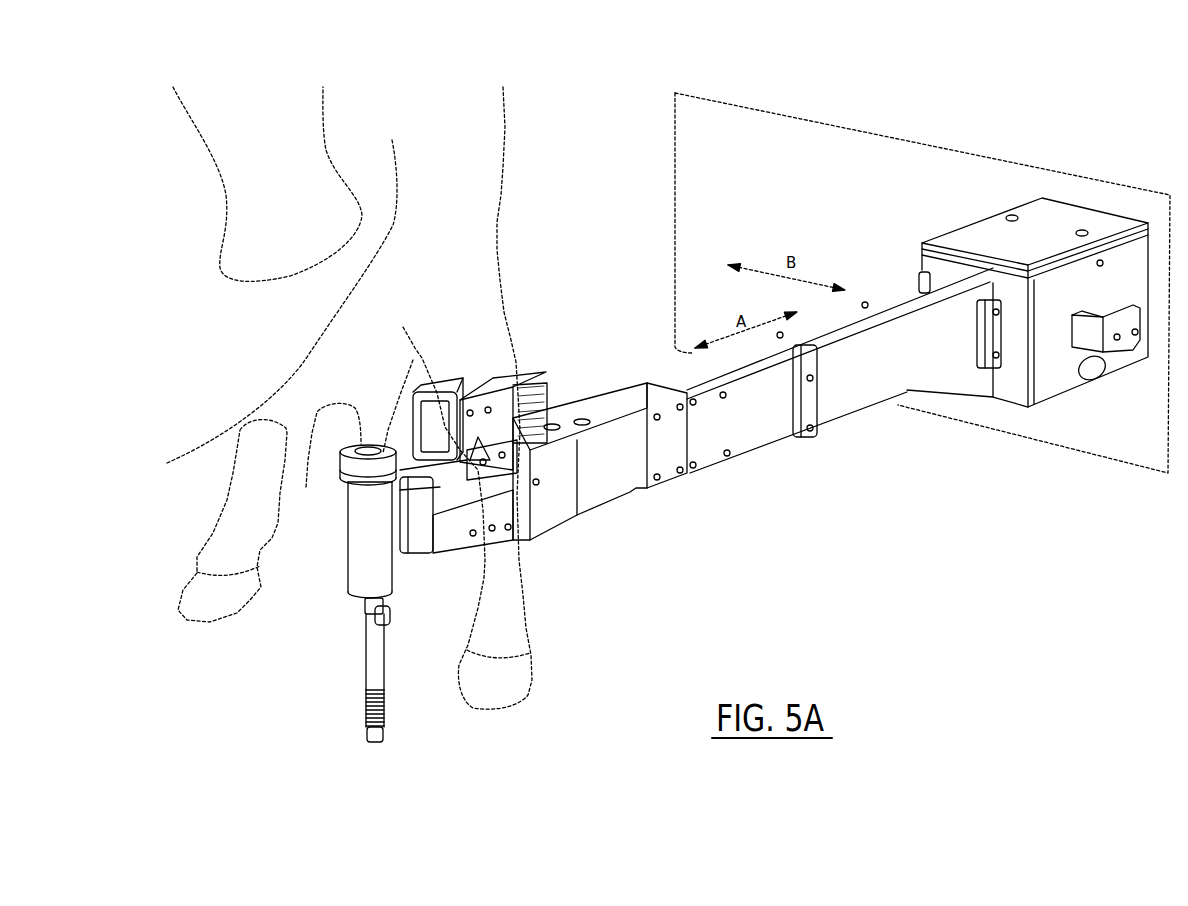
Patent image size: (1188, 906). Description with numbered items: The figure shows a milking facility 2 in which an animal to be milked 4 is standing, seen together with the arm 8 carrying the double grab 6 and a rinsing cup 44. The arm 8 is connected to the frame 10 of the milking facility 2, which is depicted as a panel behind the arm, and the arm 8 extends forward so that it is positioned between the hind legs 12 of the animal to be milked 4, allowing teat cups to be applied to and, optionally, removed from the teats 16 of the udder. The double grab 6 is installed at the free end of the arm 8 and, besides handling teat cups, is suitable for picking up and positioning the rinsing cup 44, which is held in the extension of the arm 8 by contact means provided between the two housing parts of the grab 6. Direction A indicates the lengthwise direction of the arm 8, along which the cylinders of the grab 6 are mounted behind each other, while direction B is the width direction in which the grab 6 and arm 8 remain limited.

The milking facility 2 is at (600, 212).
The animal to be milked 4 is at (500, 223).
The double grab 6 is at (330, 600).
The arm 8 is at (850, 432).
The frame 10 is at (983, 172).
The hind legs 12 is at (240, 500).
The teats 16 is at (358, 437).
The rinsing cup 44 is at (372, 552).